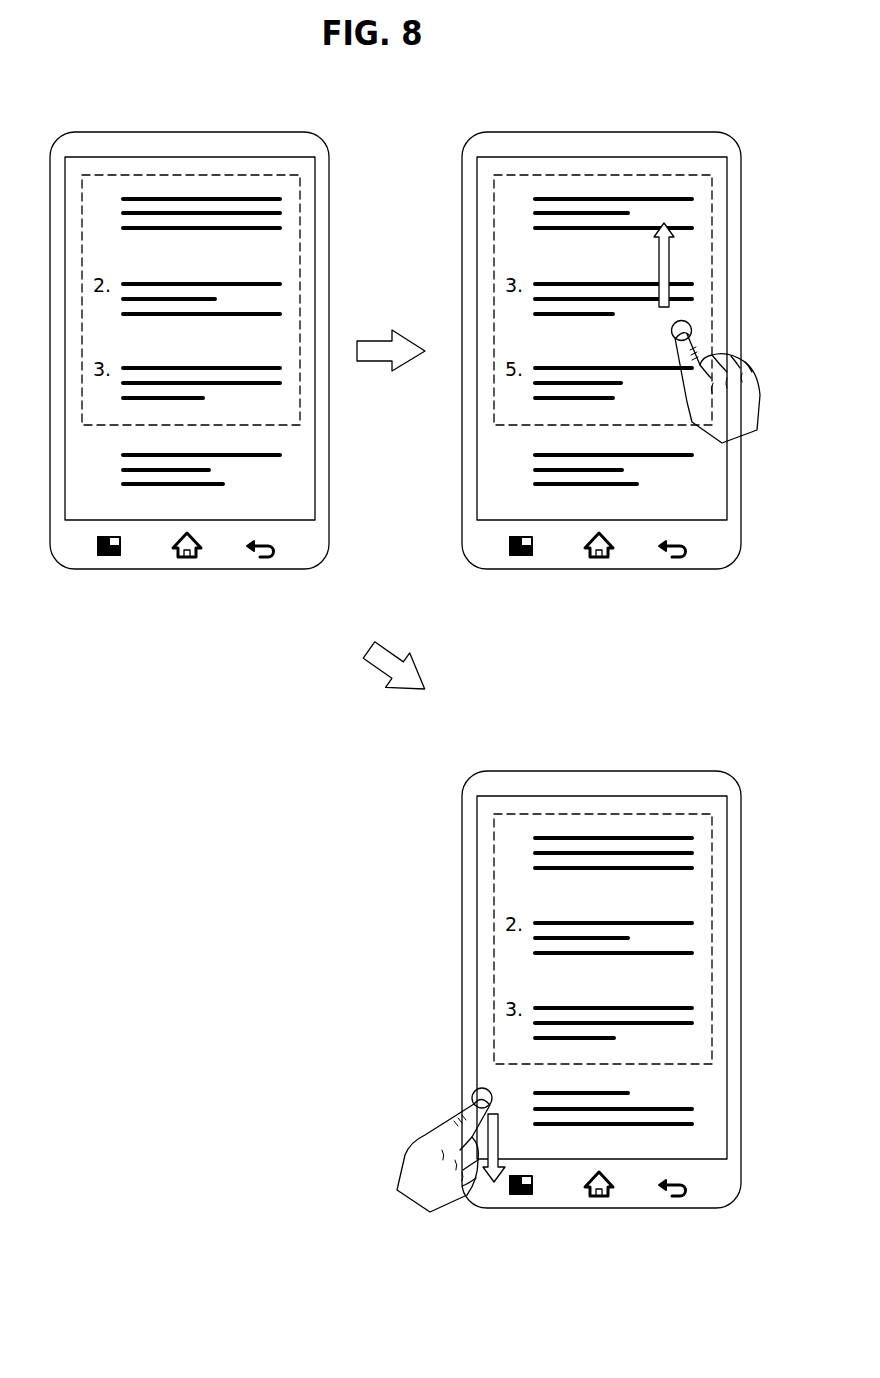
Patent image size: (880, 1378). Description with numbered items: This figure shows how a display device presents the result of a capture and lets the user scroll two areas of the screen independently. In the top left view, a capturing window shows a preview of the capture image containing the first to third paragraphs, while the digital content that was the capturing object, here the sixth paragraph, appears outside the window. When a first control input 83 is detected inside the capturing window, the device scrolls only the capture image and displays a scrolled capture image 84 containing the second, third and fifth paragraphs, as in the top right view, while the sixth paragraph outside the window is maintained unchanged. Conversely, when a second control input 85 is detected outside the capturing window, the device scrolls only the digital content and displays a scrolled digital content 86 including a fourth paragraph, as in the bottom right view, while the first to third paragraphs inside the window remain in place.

The first control input 83 is at (735, 408).
The scrolled capture image 84 is at (591, 190).
The second control input 85 is at (423, 1168).
The scrolled digital content 86 is at (705, 1088).